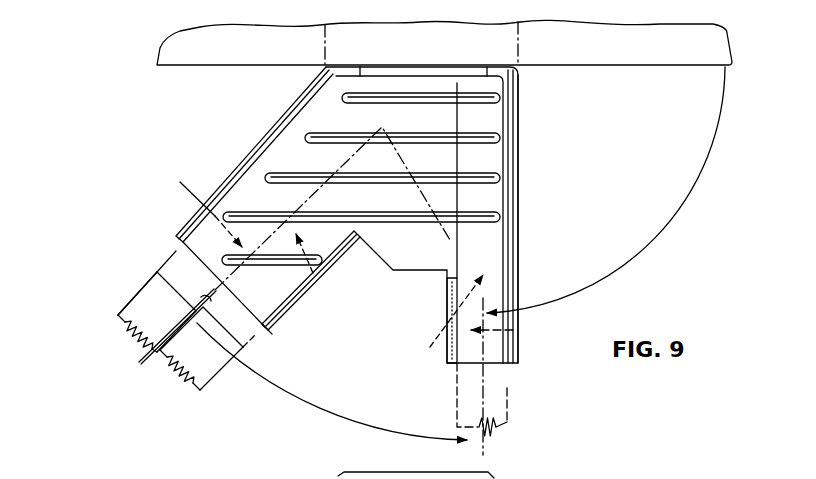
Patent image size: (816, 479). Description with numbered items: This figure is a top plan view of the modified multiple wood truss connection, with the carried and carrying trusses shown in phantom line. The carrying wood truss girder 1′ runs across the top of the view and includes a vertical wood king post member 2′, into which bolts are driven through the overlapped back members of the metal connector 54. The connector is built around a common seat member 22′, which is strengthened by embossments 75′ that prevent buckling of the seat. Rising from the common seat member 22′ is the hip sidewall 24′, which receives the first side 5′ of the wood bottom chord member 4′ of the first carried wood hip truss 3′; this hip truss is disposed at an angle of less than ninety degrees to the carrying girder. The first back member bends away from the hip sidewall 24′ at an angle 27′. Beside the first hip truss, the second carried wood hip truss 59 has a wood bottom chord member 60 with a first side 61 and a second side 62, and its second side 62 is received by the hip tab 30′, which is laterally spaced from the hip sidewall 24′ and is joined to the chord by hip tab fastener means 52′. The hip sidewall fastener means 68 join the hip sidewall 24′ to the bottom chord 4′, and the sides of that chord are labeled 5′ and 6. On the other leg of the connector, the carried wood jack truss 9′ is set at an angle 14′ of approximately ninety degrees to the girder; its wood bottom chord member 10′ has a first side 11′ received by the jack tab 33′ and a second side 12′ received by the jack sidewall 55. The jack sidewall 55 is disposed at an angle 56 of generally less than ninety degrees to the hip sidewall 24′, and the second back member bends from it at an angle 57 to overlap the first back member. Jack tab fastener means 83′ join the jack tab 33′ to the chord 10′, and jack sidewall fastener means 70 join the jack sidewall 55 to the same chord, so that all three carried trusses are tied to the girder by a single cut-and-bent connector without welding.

The carrying wood truss girder 1′ is at (634, 66).
The vertical wood king post member 2′ is at (505, 42).
The first carried wood hip truss 3′ is at (122, 325).
The wood bottom chord member 4′ is at (118, 313).
The first side 5′ is at (163, 277).
The block edge 6 is at (172, 335).
The carried wood jack truss 9′ is at (511, 413).
The wood bottom chord member 10′ is at (500, 428).
The first side 11′ is at (456, 395).
The second side 12′ is at (507, 388).
The angle 14′ is at (660, 234).
The common seat member 22′ is at (443, 207).
The hip sidewall 24′ is at (251, 156).
The angle 27′ is at (316, 110).
The hip tab 30′ is at (272, 330).
The jack tab 33′ is at (446, 352).
The hip tab fastener means 52′ is at (313, 293).
The metal connector 54 is at (522, 192).
The jack sidewall 55 is at (517, 228).
The angle 56 is at (330, 413).
The angle 57 is at (503, 120).
The second carried wood hip truss 59 is at (160, 368).
The wood bottom chord member 60 is at (192, 386).
The first side 61 is at (204, 323).
The second side 62 is at (205, 385).
The hip sidewall fastener means 68 is at (194, 190).
The jack sidewall fastener means 70 is at (524, 329).
The embossments 75′ is at (466, 220).
The jack tab fastener means 83′ is at (447, 345).